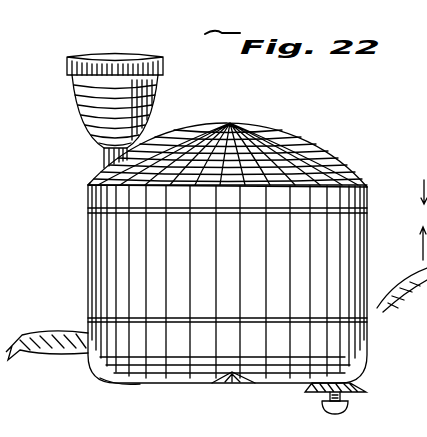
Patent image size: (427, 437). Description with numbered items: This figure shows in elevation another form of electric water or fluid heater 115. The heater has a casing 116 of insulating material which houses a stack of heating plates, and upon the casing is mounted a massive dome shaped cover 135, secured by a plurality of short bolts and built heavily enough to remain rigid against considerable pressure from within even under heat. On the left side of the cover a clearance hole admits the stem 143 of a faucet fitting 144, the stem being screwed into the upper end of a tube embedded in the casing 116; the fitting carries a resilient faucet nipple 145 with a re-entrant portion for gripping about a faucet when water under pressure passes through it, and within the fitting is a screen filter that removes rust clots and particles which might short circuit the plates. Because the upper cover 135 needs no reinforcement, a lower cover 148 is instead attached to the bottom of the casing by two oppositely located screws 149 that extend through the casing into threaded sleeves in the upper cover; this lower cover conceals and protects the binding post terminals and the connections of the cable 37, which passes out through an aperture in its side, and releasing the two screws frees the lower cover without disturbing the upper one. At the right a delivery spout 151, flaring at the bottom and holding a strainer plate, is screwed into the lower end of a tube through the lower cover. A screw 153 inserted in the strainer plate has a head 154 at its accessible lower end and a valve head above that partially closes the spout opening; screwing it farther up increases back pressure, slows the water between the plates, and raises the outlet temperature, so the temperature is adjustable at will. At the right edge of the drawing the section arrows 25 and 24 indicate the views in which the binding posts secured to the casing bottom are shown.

The heater 115 is at (78, 202).
The casing 116 is at (88, 266).
The dome shaped cover 135 is at (328, 152).
The stem 143 is at (103, 156).
The faucet fitting 144 is at (74, 108).
The faucet nipple 145 is at (96, 55).
The lower cover 148 is at (114, 381).
The screws 149 is at (232, 384).
The delivery spout 151 is at (362, 390).
The screw 153 is at (331, 397).
The head 154 is at (340, 408).
The cable 37 is at (55, 334).
The direction arrow 25 is at (424, 193).
The direction arrow 24 is at (423, 239).